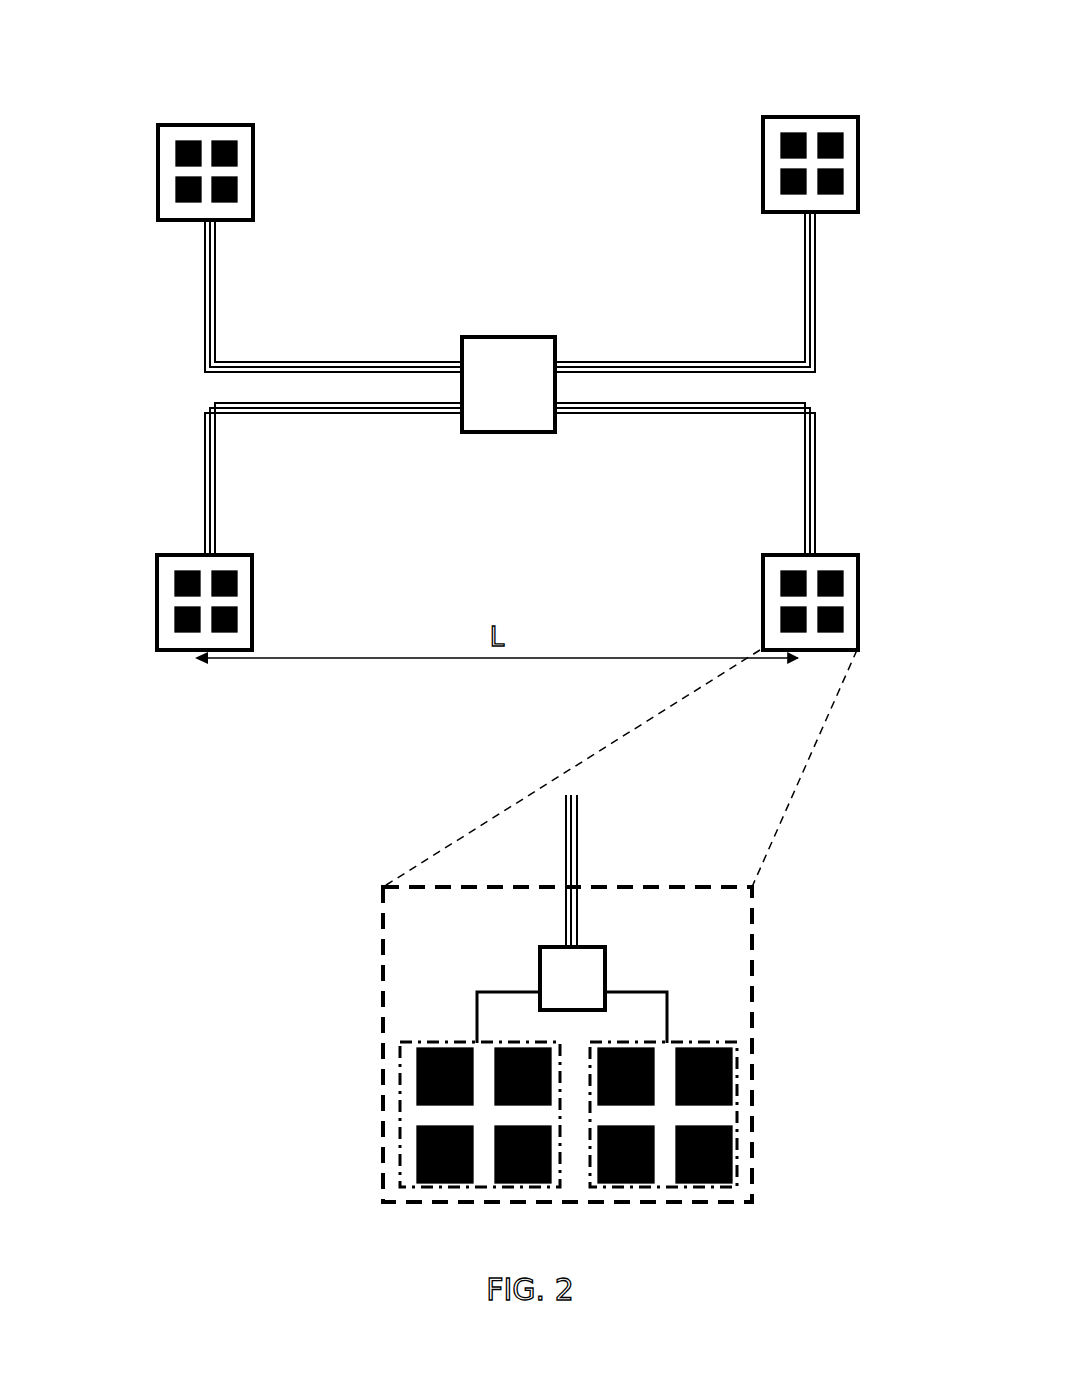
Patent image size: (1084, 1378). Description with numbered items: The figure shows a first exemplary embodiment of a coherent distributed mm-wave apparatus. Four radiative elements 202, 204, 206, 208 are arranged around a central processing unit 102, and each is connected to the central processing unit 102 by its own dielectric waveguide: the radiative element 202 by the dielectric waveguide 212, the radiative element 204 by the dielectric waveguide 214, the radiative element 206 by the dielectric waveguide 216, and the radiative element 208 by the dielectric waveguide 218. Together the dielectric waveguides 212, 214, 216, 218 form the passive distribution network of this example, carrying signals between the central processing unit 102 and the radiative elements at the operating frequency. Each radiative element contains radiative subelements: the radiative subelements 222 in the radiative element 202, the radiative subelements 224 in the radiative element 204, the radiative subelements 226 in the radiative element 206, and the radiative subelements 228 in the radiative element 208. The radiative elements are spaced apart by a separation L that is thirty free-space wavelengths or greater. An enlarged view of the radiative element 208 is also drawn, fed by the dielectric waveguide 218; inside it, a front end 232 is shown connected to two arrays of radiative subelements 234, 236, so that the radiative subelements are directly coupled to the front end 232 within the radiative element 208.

The central processing unit 102 is at (487, 402).
The radiative element 202 is at (147, 134).
The radiative element 204 is at (850, 112).
The radiative element 206 is at (154, 648).
The radiative element 208 is at (594, 875).
The dielectric waveguide 212 is at (280, 362).
The dielectric waveguide 214 is at (623, 360).
The dielectric waveguide 216 is at (348, 415).
The dielectric waveguide 218 is at (662, 413).
The radiative subelements 222 is at (170, 193).
The radiative subelements 224 is at (846, 153).
The radiative subelements 226 is at (172, 582).
The radiative subelements 228 is at (845, 610).
The front end 232 is at (551, 992).
The array of radiative subelements 234 is at (412, 1095).
The array of radiative subelements 236 is at (738, 1140).